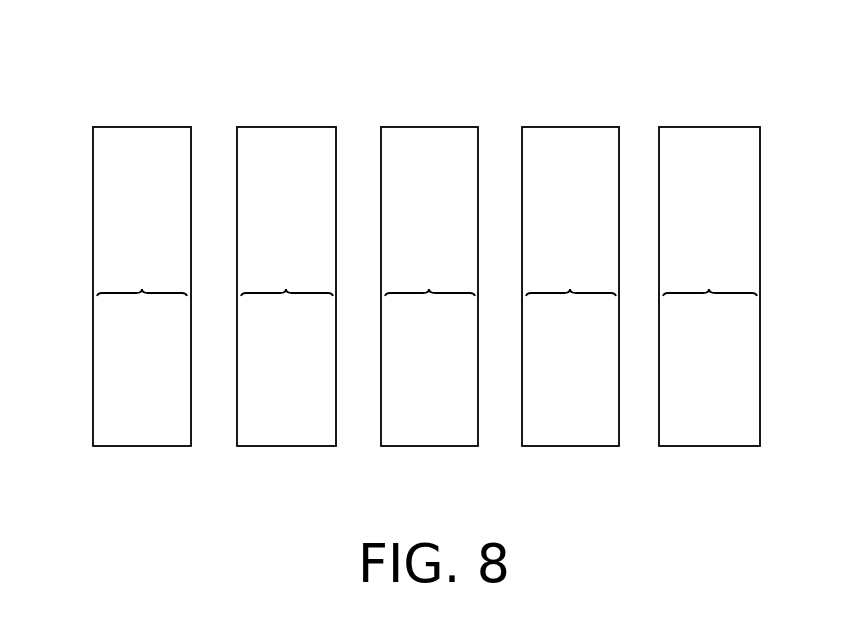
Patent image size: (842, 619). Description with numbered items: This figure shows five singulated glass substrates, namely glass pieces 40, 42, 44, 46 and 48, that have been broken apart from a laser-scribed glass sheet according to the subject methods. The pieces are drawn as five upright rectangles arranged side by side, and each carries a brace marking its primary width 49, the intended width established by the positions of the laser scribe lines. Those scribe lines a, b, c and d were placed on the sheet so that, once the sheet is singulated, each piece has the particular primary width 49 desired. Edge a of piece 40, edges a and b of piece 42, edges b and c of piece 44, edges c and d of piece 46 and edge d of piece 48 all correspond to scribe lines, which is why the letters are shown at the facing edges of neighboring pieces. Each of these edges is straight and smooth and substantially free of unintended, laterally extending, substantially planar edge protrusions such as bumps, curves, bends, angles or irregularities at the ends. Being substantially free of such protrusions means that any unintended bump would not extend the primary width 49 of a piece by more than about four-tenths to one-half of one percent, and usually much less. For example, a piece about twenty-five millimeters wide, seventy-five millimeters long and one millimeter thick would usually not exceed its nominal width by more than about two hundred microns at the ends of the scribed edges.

The glass piece 40 is at (115, 383).
The glass piece 42 is at (268, 423).
The glass piece 44 is at (427, 420).
The glass piece 46 is at (569, 413).
The glass piece 48 is at (712, 425).
The primary width 49 is at (427, 271).
The scribe line a is at (192, 153).
The scribe line b is at (337, 155).
The scribe line c is at (480, 157).
The scribe line d is at (619, 158).